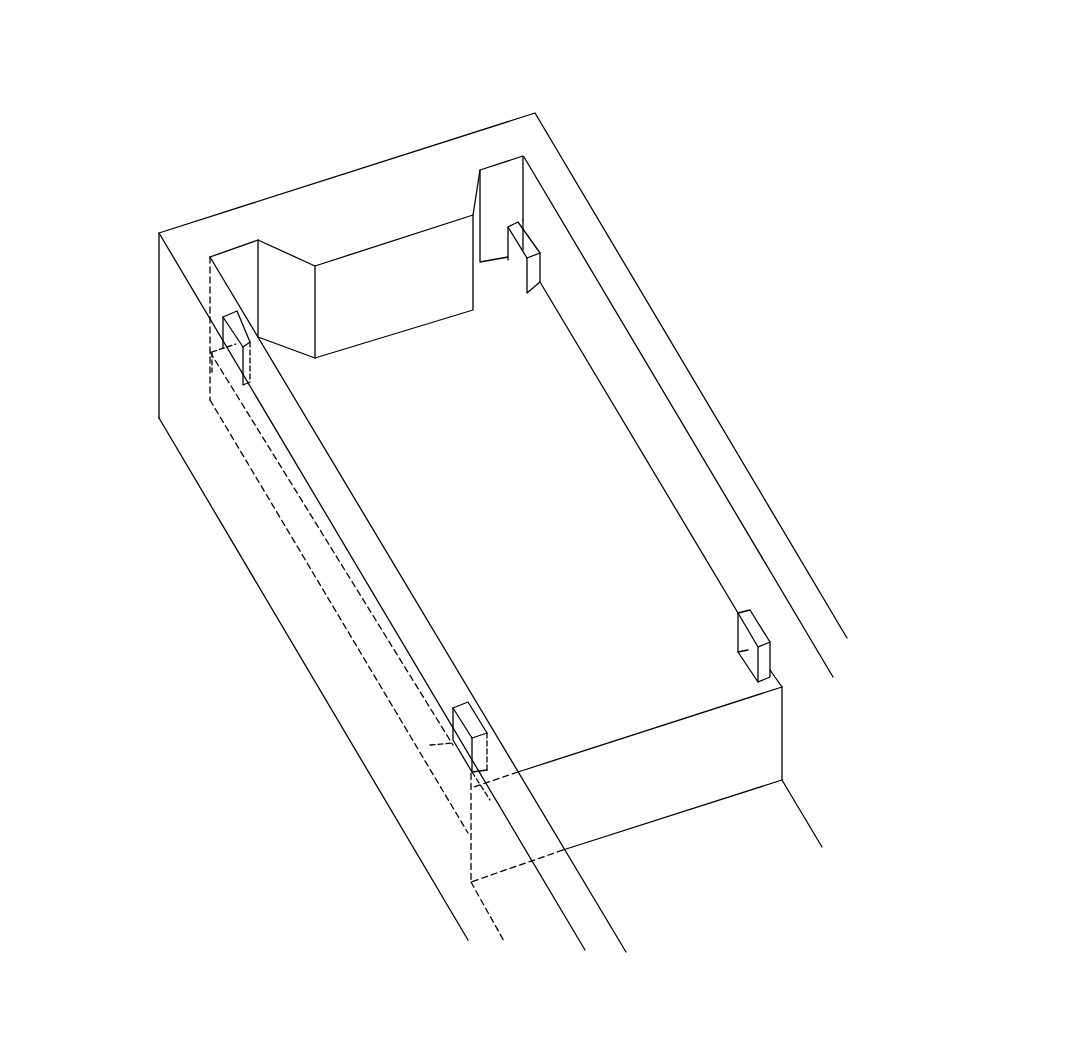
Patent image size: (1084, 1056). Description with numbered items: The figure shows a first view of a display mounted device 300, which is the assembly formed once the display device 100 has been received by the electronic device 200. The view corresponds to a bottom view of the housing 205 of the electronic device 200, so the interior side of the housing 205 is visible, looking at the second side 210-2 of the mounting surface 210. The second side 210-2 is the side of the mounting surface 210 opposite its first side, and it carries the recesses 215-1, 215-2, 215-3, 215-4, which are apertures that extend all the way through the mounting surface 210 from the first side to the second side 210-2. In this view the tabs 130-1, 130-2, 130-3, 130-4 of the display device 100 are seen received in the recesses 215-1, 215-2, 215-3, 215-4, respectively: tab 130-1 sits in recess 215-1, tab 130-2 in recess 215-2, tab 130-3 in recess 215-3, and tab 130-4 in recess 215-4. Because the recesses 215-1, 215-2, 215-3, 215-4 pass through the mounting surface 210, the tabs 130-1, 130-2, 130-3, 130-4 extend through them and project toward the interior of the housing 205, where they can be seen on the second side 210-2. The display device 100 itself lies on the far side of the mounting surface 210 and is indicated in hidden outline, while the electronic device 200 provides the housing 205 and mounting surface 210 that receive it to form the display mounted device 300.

The display mounted device 300 is at (712, 103).
The housing 205 is at (178, 223).
The mounting surface 210 is at (706, 479).
The second side of the mounting surface 210-2 is at (594, 432).
The display device 100 is at (297, 509).
The electronic device 200 is at (307, 667).
The tab 130-1 is at (527, 242).
The tab 130-2 is at (242, 333).
The tab 130-3 is at (738, 643).
The tab 130-4 is at (468, 720).
The recess 215-1 is at (518, 288).
The recess 215-2 is at (228, 358).
The recess 215-3 is at (747, 670).
The recess 215-4 is at (447, 755).